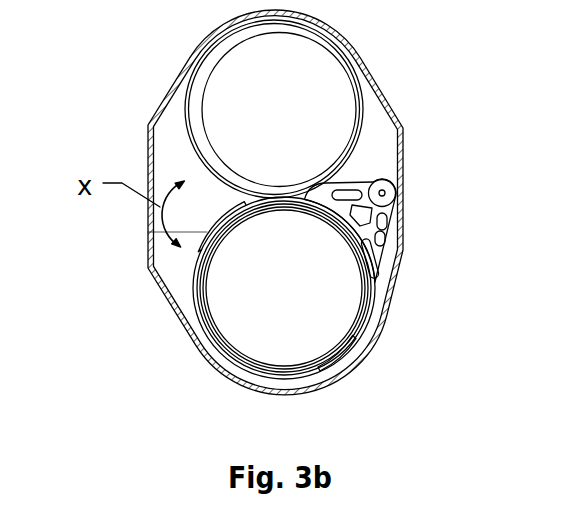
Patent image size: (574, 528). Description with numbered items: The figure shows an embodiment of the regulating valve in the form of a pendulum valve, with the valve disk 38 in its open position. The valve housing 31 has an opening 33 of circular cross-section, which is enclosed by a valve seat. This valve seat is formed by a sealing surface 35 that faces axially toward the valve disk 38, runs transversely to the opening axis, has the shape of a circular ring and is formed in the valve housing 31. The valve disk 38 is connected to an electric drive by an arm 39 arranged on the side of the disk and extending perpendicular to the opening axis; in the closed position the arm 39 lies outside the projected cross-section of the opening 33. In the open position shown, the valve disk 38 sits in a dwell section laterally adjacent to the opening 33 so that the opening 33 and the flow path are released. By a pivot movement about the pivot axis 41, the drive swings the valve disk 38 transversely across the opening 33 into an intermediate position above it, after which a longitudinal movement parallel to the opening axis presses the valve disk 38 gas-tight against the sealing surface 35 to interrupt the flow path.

The valve housing 31 is at (148, 80).
The opening 33 is at (318, 78).
The sealing surface 35 is at (355, 118).
The valve disk 38 is at (343, 296).
The arm 39 is at (378, 248).
The pivot axis 41 is at (385, 191).